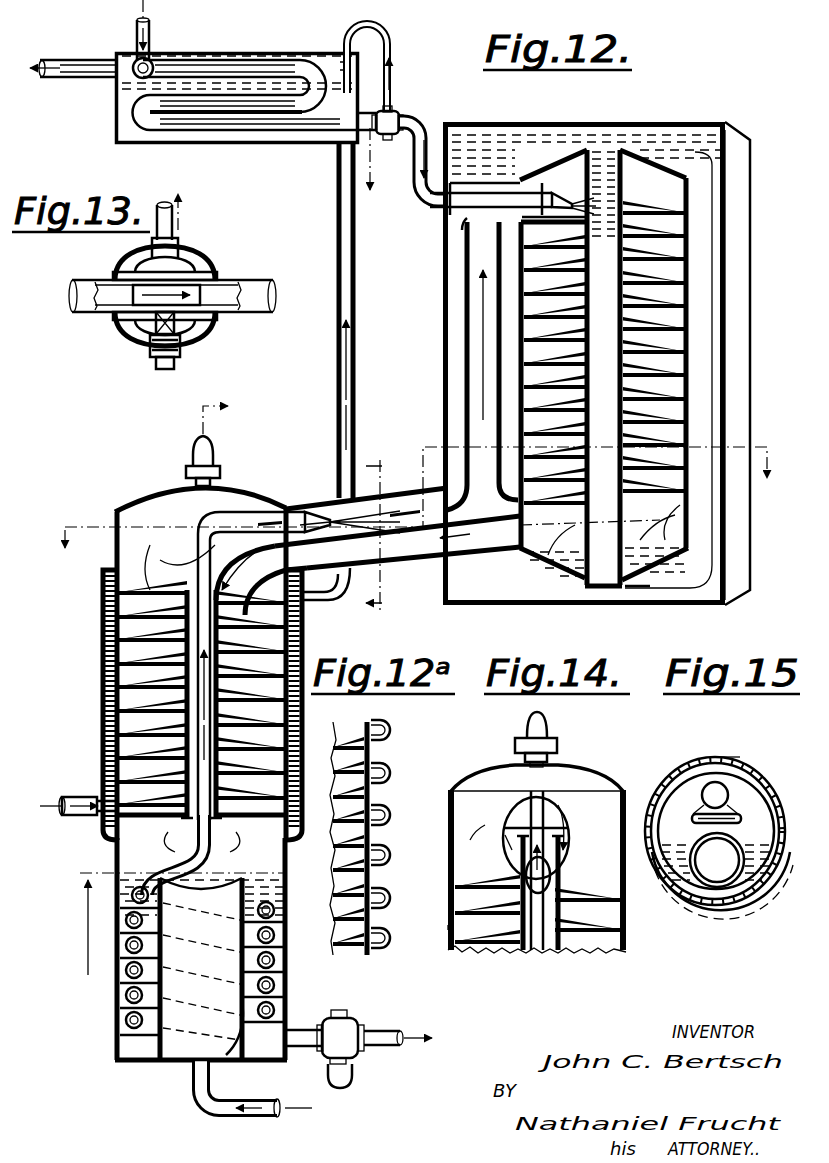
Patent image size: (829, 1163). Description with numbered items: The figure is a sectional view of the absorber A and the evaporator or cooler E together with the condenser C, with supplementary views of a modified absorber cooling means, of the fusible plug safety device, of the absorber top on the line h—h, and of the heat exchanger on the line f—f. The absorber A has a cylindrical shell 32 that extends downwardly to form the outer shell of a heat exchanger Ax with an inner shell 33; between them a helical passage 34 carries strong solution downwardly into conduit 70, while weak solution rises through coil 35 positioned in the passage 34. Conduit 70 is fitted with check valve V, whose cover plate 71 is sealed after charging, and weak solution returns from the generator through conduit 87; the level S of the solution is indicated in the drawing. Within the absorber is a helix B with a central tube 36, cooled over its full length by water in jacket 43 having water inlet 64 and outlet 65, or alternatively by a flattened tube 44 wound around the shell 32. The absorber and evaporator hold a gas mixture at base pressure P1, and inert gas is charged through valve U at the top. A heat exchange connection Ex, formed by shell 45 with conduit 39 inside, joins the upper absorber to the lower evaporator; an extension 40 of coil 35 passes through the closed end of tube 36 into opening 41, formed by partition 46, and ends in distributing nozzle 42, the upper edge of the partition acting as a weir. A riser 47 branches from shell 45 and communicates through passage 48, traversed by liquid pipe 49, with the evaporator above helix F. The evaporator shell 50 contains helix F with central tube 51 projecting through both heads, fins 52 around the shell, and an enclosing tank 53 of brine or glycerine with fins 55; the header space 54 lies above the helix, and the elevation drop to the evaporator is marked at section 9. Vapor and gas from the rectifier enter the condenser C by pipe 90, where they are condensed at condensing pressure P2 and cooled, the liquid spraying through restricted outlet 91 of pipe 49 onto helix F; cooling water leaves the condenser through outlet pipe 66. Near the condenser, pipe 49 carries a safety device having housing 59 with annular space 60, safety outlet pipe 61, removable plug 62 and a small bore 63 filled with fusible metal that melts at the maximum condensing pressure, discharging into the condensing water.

In FIG. 12, the pipe 90 is at (145, 46).
In FIG. 12, the condenser C is at (205, 66).
In FIG. 12, the safety outlet pipe 61 is at (392, 56).
In FIG. 13, the safety outlet pipe 61 is at (157, 222).
In FIG. 12, the housing 59 is at (396, 114).
In FIG. 13, the housing 59 is at (138, 324).
In FIG. 12, the liquid pipe 49 is at (422, 126).
In FIG. 13, the liquid pipe 49 is at (86, 306).
In FIG. 12, the header space 54 is at (487, 148).
In FIG. 12, the restricted outlet 91 is at (552, 196).
In FIG. 12, the central tube 51 is at (630, 180).
In FIG. 12, the cylindrical shell 50 is at (690, 235).
In FIG. 12, the evaporator E is at (692, 318).
In FIG. 12, the tank 53 is at (727, 345).
In FIG. 12, the fins 52 is at (702, 372).
In FIG. 12, the fins 55 is at (737, 400).
In FIG. 12, the section line 9 is at (415, 349).
In FIG. 12, the outlet pipe 66 is at (55, 74).
In FIG. 12, the condensing pressure P2 is at (270, 128).
In FIG. 12, the passage 48 is at (462, 197).
In FIG. 12, the riser 47 is at (465, 295).
In FIG. 12, the helix F is at (540, 322).
In FIG. 12, the pipe 65 is at (338, 352).
In FIG. 12, the shell 45 is at (420, 497).
In FIG. 15, the shell 45 is at (685, 888).
In FIG. 12, the conduit 39 is at (470, 546).
In FIG. 14, the conduit 39 is at (550, 873).
In FIG. 15, the conduit 39 is at (742, 878).
In FIG. 12, the heat exchange connection Ex is at (428, 560).
In FIG. 15, the heat exchange connection Ex is at (735, 748).
In FIG. 12, the base pressure P1 is at (402, 547).
In FIG. 14, the base pressure P1 is at (473, 822).
In FIG. 12, the valve U is at (190, 468).
In FIG. 14, the valve U is at (540, 748).
In FIG. 12, the extension 40 is at (197, 520).
In FIG. 14, the extension 40 is at (536, 950).
In FIG. 15, the extension 40 is at (722, 792).
In FIG. 12, the partition 46 is at (240, 560).
In FIG. 14, the partition 46 is at (512, 848).
In FIG. 12, the opening 41 is at (280, 511).
In FIG. 14, the opening 41 is at (515, 818).
In FIG. 15, the opening 41 is at (716, 831).
In FIG. 12, the distributing nozzle 42 is at (320, 512).
In FIG. 15, the distributing nozzle 42 is at (700, 814).
In FIG. 12, the jacket 43 is at (102, 612).
In FIG. 12, the absorber A is at (103, 660).
In FIG. 14, the absorber A is at (460, 788).
In FIG. 12, the central tube 36 is at (118, 728).
In FIG. 14, the central tube 36 is at (560, 950).
In FIG. 12, the helix B is at (270, 706).
In FIG. 12A, the helix B is at (346, 748).
In FIG. 14, the helix B is at (485, 946).
In FIG. 12, the water inlet 64 is at (78, 798).
In FIG. 12, the cylindrical shell 32 is at (116, 852).
In FIG. 12A, the cylindrical shell 32 is at (372, 928).
In FIG. 14, the cylindrical shell 32 is at (447, 928).
In FIG. 12, the liquid level S is at (82, 938).
In FIG. 12, the coil 35 is at (118, 1005).
In FIG. 12, the heat exchanger Ax is at (201, 968).
In FIG. 12, the helical passage 34 is at (278, 988).
In FIG. 12, the check valve V is at (345, 1028).
In FIG. 12, the conduit 70 is at (370, 1036).
In FIG. 12, the outer cover plate 71 is at (349, 1076).
In FIG. 12, the conduit 87 is at (192, 1080).
In FIG. 12, the inner shell 33 is at (232, 1058).
In FIG. 13, the annular space 60 is at (176, 266).
In FIG. 13, the small bore 63 is at (185, 332).
In FIG. 13, the removable plug 62 is at (156, 363).
In FIG. 12A, the flattened tube 44 is at (386, 824).